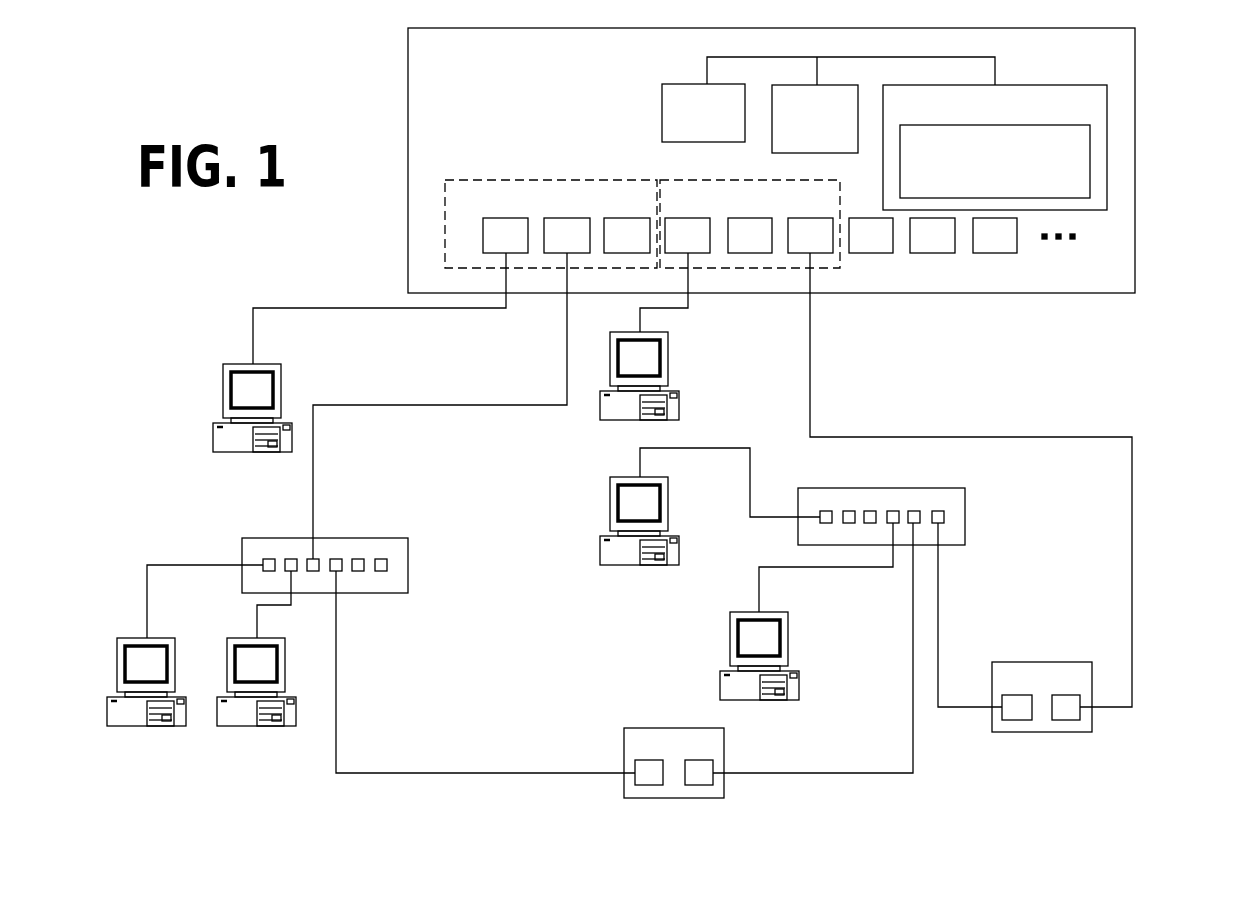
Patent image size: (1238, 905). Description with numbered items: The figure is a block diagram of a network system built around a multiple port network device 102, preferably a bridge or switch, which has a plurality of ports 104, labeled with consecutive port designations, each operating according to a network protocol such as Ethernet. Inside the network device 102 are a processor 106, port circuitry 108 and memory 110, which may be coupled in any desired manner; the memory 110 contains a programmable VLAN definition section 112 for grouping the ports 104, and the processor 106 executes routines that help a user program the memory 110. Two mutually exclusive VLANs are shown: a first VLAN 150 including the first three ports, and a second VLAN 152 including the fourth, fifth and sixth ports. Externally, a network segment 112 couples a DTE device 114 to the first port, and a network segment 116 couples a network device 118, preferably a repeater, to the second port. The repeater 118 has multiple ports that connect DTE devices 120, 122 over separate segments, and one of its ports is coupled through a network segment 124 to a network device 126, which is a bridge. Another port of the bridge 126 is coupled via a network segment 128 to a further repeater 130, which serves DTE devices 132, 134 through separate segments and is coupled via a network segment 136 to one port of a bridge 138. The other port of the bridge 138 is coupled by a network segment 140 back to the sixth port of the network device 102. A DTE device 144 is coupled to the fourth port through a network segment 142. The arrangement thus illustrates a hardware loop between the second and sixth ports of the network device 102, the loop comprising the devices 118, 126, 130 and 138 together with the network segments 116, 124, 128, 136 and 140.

The multiple port network device 102 is at (480, 69).
The ports 104 is at (760, 253).
The processor 106 is at (817, 96).
The port circuitry 108 is at (807, 85).
The memory 110 is at (995, 130).
The VLAN definition section 112 is at (1083, 157).
The DTE device 114 is at (234, 386).
The network segment 116 is at (440, 406).
The network device 118 is at (325, 552).
The DTE device 120 is at (185, 666).
The DTE device 122 is at (256, 669).
The network segment 124 is at (485, 672).
The network device 126 is at (672, 748).
The network segment 128 is at (813, 648).
The repeater 130 is at (881, 499).
The DTE device 132 is at (680, 506).
The DTE device 134 is at (793, 611).
The network segment 136 is at (970, 615).
The bridge 138 is at (1042, 678).
The network segment 140 is at (971, 480).
The network segment 142 is at (636, 292).
The DTE device 144 is at (660, 376).
The VLAN V1 150 is at (551, 208).
The VLAN V2 152 is at (750, 208).